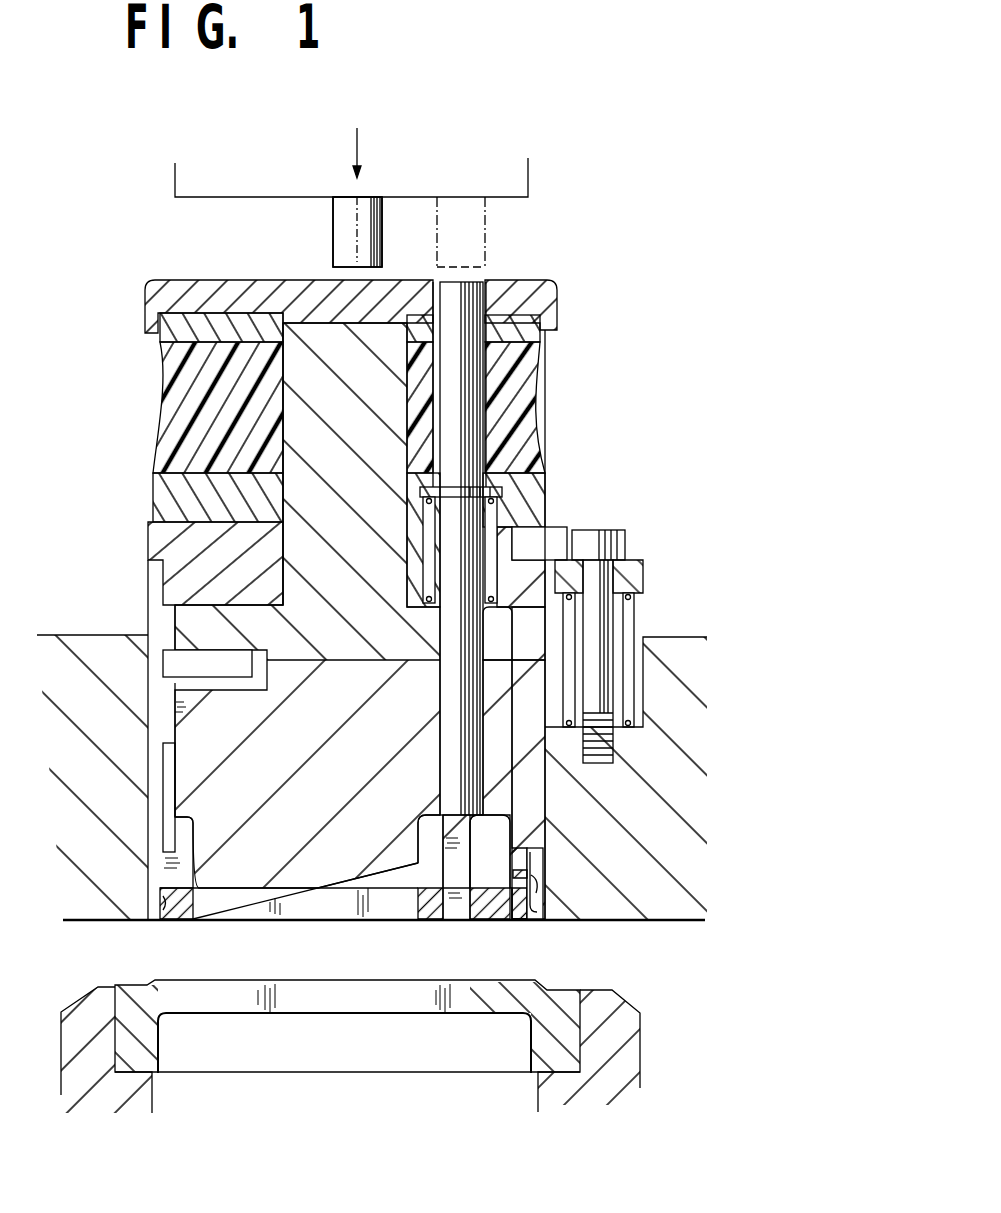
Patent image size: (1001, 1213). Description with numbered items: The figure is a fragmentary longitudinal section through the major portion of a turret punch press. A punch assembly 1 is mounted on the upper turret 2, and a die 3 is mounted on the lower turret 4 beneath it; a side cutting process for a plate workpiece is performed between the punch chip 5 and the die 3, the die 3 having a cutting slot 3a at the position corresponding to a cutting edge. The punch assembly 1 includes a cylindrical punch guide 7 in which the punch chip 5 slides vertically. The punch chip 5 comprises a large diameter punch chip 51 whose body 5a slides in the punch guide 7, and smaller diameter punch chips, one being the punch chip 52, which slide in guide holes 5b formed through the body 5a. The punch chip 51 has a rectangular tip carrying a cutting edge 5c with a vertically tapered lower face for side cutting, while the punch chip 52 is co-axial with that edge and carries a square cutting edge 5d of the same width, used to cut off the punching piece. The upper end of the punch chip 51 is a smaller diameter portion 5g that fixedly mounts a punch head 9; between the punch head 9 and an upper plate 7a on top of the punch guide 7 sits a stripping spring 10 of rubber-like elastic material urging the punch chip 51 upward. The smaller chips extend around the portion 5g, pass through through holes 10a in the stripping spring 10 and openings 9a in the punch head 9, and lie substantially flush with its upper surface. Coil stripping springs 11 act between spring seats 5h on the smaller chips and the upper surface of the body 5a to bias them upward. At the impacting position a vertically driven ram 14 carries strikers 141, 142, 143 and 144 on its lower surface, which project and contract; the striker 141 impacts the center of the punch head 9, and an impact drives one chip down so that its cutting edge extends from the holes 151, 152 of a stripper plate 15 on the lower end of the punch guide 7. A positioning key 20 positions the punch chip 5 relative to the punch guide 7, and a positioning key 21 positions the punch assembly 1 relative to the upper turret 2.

The punch assembly 1 is at (134, 524).
The upper turret 2 is at (658, 836).
The die 3 is at (563, 1003).
The cutting slot 3a is at (262, 1013).
The lower turret 4 is at (625, 1020).
The punch chip 5 is at (84, 786).
The body 5a is at (175, 700).
The guide hole 5b is at (445, 717).
The cutting edge 5c is at (250, 908).
The cutting edge 5d is at (452, 908).
The smaller diameter portion 5g is at (297, 426).
The spring seat 5h is at (508, 473).
The large diameter punch chip 51 is at (193, 735).
The smaller diameter punch chip 52 is at (445, 758).
The punch guide 7 is at (152, 857).
The upper plate 7a is at (150, 553).
The punch head 9 is at (145, 293).
The opening 9a is at (485, 282).
The stripping spring 10 is at (163, 374).
The through hole 10a is at (488, 410).
The stripping spring 11 is at (512, 504).
The ram 14 is at (530, 174).
The striker 141 is at (343, 238).
The striker 142 is at (477, 248).
The striker 143 is at (316, 240).
The striker 144 is at (357, 232).
The stripper plate 15 is at (508, 905).
The hole 151 is at (360, 905).
The hole 152 is at (450, 912).
The positioning key 20 is at (175, 652).
The positioning key 21 is at (563, 527).